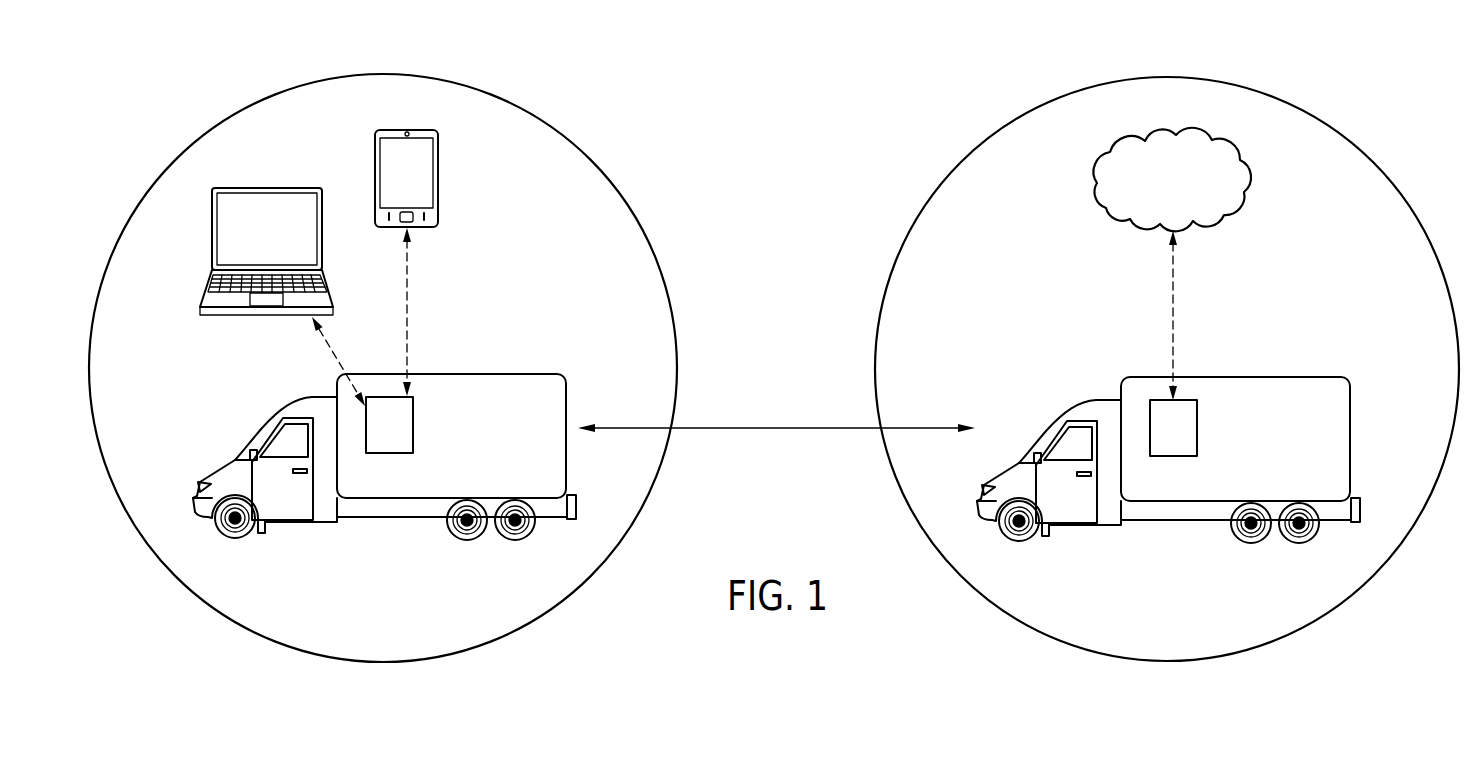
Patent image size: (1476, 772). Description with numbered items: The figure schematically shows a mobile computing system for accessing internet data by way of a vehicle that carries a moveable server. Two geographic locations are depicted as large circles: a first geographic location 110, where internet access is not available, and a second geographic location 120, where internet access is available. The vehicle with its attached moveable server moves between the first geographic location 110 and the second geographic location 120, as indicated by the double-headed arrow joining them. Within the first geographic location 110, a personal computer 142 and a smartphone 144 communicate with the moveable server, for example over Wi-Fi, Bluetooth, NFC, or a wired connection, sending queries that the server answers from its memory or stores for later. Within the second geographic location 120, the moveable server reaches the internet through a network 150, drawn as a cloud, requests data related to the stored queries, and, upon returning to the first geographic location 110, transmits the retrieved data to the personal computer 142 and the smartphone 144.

The first geographic location 110 is at (422, 75).
The second geographic location 120 is at (1303, 108).
The personal computer 142 is at (230, 315).
The smartphone 144 is at (438, 175).
The network 150 is at (1242, 176).